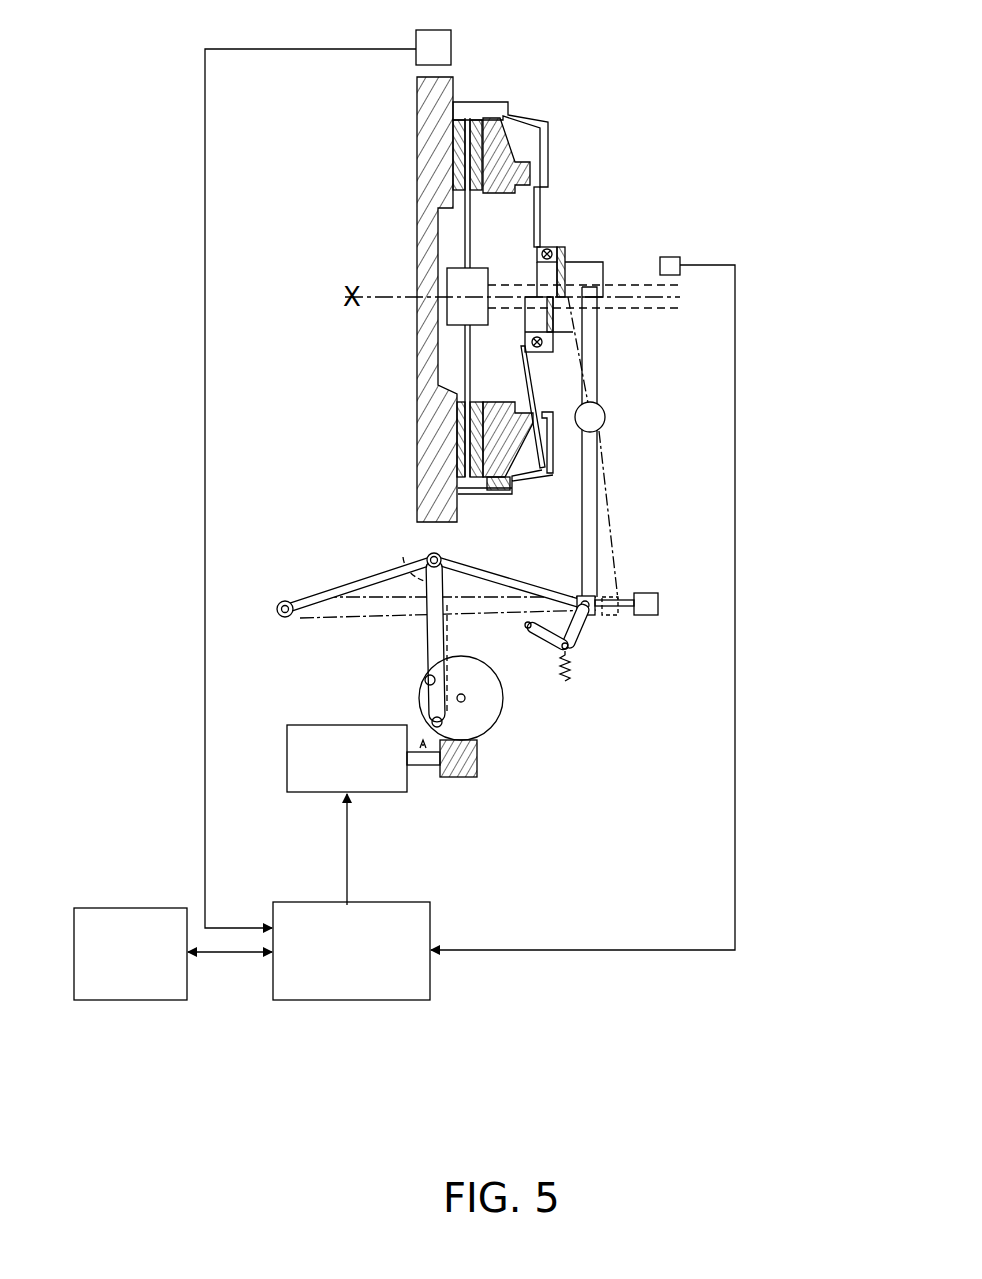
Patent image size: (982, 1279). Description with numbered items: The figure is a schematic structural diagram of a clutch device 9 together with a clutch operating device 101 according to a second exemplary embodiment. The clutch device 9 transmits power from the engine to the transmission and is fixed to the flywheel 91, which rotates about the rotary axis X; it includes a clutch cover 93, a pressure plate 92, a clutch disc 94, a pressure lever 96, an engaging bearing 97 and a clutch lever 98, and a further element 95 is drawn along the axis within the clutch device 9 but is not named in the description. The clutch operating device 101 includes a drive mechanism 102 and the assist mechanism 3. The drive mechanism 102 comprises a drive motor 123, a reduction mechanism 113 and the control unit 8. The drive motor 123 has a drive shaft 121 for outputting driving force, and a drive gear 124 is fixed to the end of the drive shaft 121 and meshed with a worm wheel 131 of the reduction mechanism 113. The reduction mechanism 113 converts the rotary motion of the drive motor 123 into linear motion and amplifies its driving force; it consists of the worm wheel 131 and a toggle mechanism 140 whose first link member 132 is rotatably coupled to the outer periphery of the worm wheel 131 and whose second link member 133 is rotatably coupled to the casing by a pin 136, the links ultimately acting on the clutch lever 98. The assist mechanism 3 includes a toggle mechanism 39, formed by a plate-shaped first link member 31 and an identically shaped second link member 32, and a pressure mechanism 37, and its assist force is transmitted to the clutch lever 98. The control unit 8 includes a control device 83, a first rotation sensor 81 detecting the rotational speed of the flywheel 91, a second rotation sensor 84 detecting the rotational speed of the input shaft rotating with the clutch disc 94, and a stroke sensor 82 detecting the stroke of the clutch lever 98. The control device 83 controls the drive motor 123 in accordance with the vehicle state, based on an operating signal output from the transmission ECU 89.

The assist mechanism 3 is at (587, 677).
The control unit 8 is at (293, 943).
The clutch device 9 is at (503, 269).
The first link member 31 is at (526, 628).
The second link member 32 is at (592, 612).
The pressure mechanism 37 is at (566, 680).
The toggle mechanism 39 is at (589, 642).
The first rotation sensor 81 is at (416, 42).
The stroke sensor 82 is at (652, 616).
The control device 83 is at (432, 977).
The second rotation sensor 84 is at (584, 616).
The transmission ECU 89 is at (142, 912).
The flywheel 91 is at (417, 104).
The pressure plate 92 is at (522, 126).
The clutch cover 93 is at (497, 116).
The clutch disc 94 is at (468, 118).
The shaft 95 is at (464, 240).
The pressure lever 96 is at (540, 205).
The engaging bearing 97 is at (572, 250).
The clutch lever 98 is at (598, 352).
The clutch operating device 101 is at (595, 965).
The drive mechanism 102 is at (394, 775).
The reduction mechanism 113 is at (420, 589).
The drive shaft 121 is at (425, 767).
The drive motor 123 is at (350, 726).
The drive gear 124 is at (478, 760).
The worm wheel 131 is at (503, 690).
The first link member 132 is at (434, 590).
The second link member 133 is at (320, 598).
The pin 136 is at (284, 600).
The toggle mechanism 140 is at (520, 575).